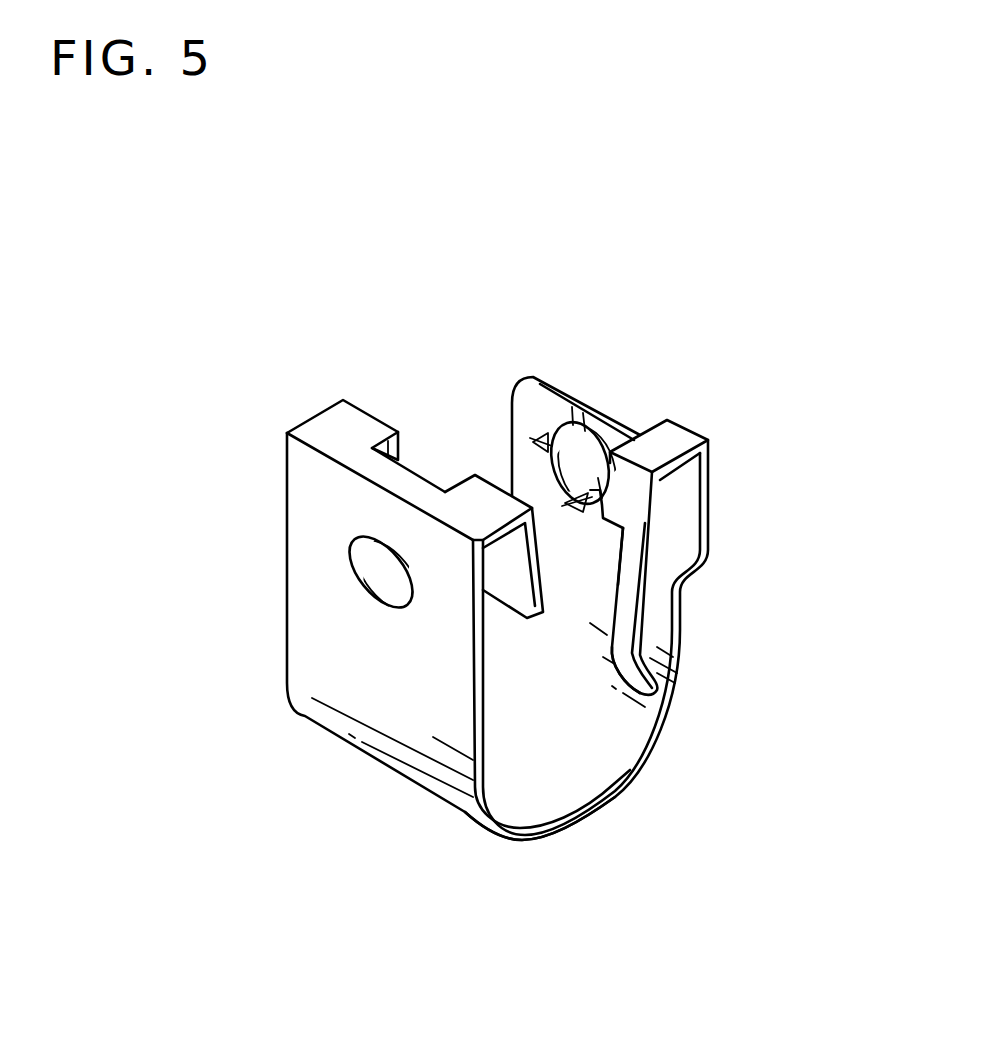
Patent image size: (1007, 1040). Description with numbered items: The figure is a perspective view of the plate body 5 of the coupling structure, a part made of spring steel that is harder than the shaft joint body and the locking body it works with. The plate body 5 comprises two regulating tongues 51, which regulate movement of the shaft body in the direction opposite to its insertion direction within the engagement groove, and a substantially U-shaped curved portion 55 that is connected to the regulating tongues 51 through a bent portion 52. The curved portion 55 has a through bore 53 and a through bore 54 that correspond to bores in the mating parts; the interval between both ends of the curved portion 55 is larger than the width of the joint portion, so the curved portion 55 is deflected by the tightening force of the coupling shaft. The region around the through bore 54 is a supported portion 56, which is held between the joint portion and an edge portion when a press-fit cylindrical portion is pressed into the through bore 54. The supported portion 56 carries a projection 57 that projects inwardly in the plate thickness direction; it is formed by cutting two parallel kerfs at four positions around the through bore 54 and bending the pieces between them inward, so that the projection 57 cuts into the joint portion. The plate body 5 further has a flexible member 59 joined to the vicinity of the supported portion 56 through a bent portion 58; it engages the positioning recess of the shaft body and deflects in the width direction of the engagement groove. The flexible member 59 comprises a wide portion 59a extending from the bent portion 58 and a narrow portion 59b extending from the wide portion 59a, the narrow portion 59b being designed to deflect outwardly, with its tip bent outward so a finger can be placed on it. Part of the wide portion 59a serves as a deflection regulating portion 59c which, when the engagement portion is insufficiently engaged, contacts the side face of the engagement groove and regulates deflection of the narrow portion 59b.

The plate body 5 is at (672, 736).
The regulating tongues 51 is at (405, 450).
The bent portion 52 is at (485, 488).
The through bore 53 is at (360, 577).
The through bore 54 is at (604, 437).
The curved portion 55 is at (575, 795).
The supported portion 56 is at (612, 450).
The projection 57 is at (537, 436).
The bent portion 58 is at (668, 425).
The flexible member 59 is at (655, 587).
The wide portion 59a is at (633, 520).
The narrow portion 59b is at (640, 647).
The deflection regulating portion 59c is at (622, 511).